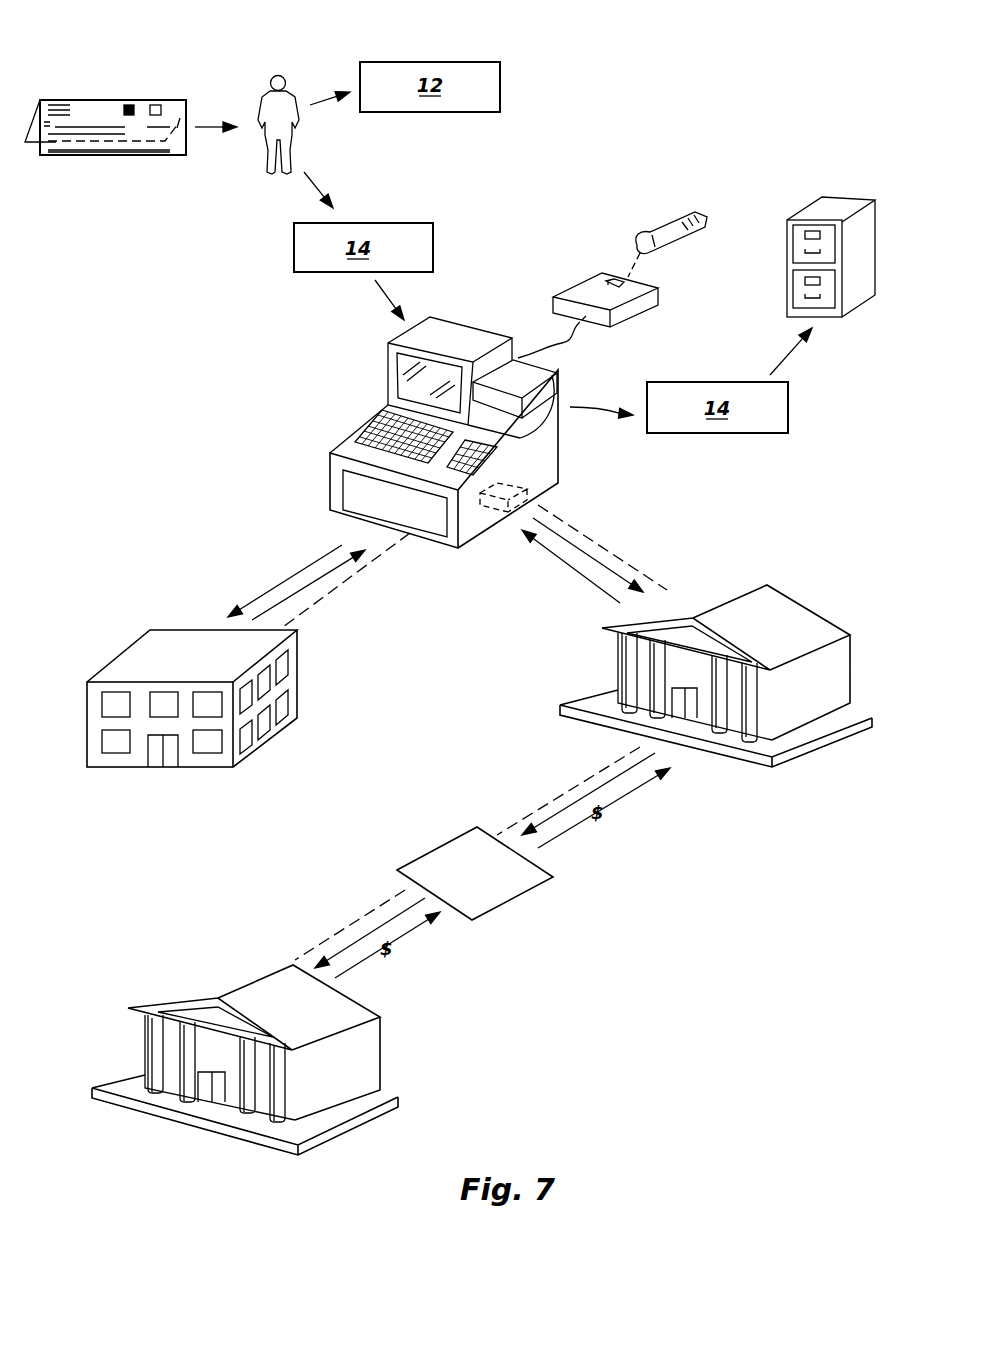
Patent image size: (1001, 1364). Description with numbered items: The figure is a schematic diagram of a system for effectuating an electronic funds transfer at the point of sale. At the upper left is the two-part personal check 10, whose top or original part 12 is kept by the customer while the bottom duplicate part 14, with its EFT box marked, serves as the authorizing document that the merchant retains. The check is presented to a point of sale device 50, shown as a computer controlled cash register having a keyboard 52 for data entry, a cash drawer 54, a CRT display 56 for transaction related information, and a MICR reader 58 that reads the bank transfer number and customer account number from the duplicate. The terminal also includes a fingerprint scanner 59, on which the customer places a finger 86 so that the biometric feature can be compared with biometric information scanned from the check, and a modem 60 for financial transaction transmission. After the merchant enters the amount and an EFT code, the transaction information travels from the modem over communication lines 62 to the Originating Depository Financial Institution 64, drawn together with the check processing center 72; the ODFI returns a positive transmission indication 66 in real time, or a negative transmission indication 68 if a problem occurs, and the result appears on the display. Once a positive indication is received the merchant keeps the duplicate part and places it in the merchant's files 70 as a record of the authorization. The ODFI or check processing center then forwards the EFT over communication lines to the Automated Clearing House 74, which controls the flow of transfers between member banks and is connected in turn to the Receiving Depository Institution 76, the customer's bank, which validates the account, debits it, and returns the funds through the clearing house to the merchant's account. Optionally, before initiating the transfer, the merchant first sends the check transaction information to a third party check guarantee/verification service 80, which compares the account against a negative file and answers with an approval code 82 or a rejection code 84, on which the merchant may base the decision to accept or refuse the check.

The two-part personal check 10 is at (79, 72).
The top or original part 12 is at (113, 135).
The bottom duplicate part 14 is at (27, 143).
The point of sale device 50 is at (288, 463).
The keyboard 52 is at (368, 420).
The cash drawer 54 is at (357, 492).
The CRT display 56 is at (412, 383).
The MICR reader 58 is at (538, 362).
The fingerprint scanner 59 is at (582, 292).
The modem 60 is at (518, 483).
The communication lines 62 is at (313, 605).
The Originating Depository Financial Institution (ODFI) 64 is at (660, 706).
The check processing center 72 is at (582, 667).
The positive transmission indication 66 is at (533, 560).
The negative transmission indication 68 is at (577, 575).
The merchant's files 70 is at (822, 205).
The Automated Clearing House (ACH) 74 is at (402, 826).
The Receiving Depository Institution (RDFI) 76 is at (201, 953).
The third party check guarantee/verification service 80 is at (112, 631).
The approval code 82 is at (261, 577).
The rejection code 84 is at (303, 585).
The finger 86 is at (663, 222).